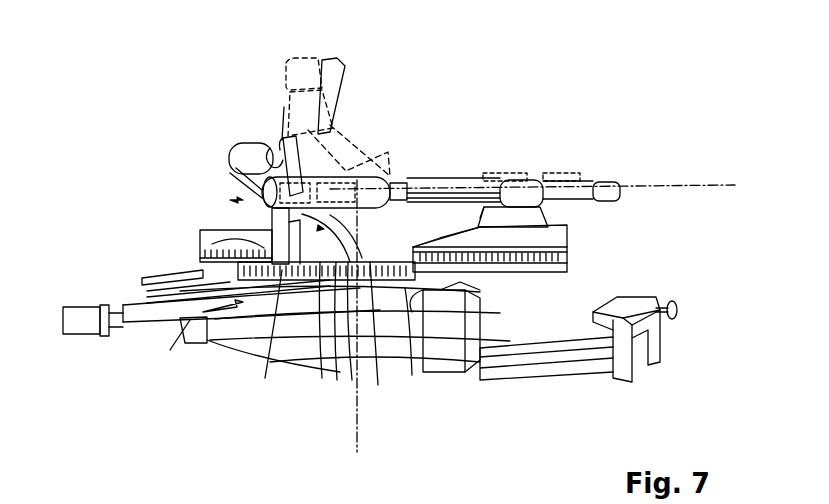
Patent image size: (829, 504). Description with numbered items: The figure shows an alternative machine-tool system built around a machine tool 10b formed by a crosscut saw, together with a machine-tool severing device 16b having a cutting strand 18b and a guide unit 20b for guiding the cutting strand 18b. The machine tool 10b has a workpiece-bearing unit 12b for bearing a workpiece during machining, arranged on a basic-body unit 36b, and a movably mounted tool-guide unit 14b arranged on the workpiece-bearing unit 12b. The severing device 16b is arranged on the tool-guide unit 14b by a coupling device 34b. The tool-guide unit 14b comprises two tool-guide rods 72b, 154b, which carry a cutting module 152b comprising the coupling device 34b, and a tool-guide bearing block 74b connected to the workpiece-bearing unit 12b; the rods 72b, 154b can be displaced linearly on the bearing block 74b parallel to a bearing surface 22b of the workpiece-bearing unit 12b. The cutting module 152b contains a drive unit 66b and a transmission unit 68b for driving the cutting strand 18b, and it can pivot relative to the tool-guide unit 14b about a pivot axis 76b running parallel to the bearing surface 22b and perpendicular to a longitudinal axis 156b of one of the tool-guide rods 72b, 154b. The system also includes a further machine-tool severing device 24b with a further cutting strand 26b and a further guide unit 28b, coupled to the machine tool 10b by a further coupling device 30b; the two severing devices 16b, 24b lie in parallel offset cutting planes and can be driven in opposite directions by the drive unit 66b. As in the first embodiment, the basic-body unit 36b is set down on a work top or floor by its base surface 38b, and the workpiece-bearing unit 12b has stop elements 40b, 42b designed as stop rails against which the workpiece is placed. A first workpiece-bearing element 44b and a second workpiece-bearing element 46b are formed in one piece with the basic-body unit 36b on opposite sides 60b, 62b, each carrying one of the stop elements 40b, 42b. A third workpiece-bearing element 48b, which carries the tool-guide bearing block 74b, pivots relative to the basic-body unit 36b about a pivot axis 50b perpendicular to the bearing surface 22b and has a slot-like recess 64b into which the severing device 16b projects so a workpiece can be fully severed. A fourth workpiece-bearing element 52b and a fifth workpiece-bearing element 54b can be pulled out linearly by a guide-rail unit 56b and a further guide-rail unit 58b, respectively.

The machine tool 10b is at (630, 71).
The workpiece-bearing unit 12b is at (183, 341).
The tool-guide unit 14b is at (589, 145).
The machine-tool severing device 16b is at (268, 216).
The cutting strand 18b is at (262, 228).
The guide unit 20b is at (264, 238).
The bearing surface 22b is at (372, 262).
The further machine-tool severing device 24b is at (338, 395).
The further cutting strand 26b is at (300, 265).
The further guide unit 28b is at (284, 352).
The further coupling device 30b is at (383, 395).
The coupling device 34b is at (190, 168).
The basic-body unit 36b is at (272, 343).
The base surface 38b is at (463, 378).
The stop element 40b is at (562, 252).
The stop element 42b is at (200, 244).
The first workpiece-bearing element 44b is at (517, 371).
The second workpiece-bearing element 46b is at (238, 254).
The third workpiece-bearing element 48b is at (405, 365).
The pivot axis 50b is at (360, 446).
The fourth workpiece-bearing element 52b is at (628, 301).
The fifth workpiece-bearing element 54b is at (142, 274).
The guide-rail unit 56b is at (577, 386).
The further guide-rail unit 58b is at (121, 275).
The side of the basic-body unit 60b is at (686, 340).
The side of the basic-body unit 62b is at (82, 241).
The slot-like recess 64b is at (413, 251).
The drive unit 66b is at (368, 173).
The transmission unit 68b is at (236, 165).
The tool-guide rod 72b is at (612, 183).
The tool-guide bearing block 74b is at (548, 203).
The pivot axis 76b is at (182, 168).
The cutting module 152b is at (266, 114).
The tool-guide rod 154b is at (560, 178).
The longitudinal axis 156b is at (692, 185).